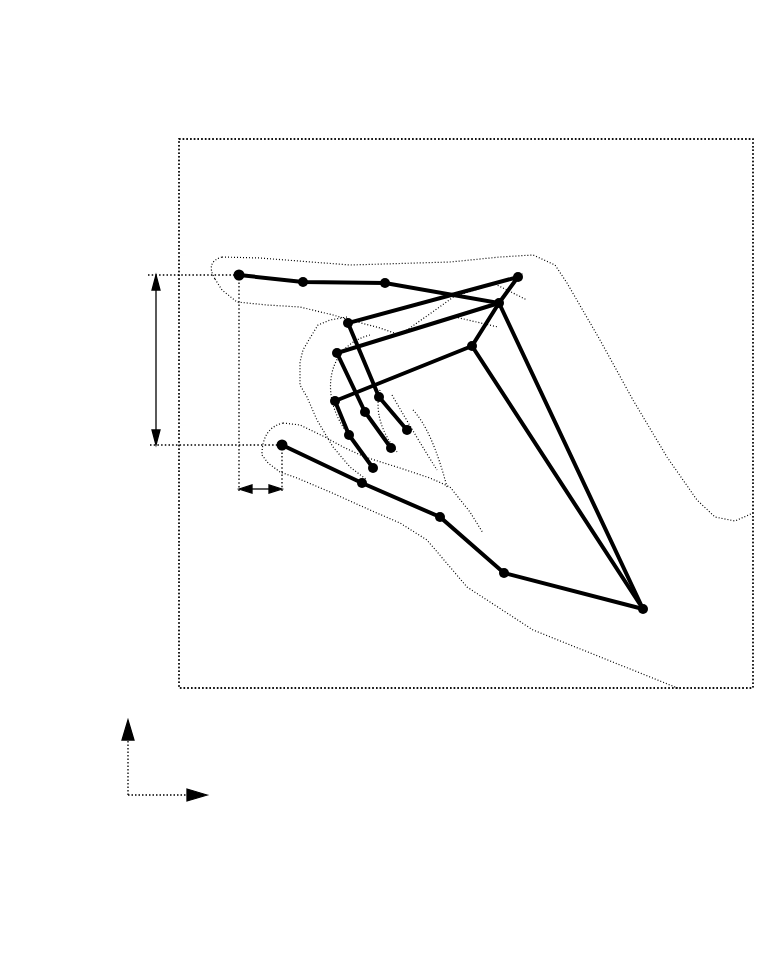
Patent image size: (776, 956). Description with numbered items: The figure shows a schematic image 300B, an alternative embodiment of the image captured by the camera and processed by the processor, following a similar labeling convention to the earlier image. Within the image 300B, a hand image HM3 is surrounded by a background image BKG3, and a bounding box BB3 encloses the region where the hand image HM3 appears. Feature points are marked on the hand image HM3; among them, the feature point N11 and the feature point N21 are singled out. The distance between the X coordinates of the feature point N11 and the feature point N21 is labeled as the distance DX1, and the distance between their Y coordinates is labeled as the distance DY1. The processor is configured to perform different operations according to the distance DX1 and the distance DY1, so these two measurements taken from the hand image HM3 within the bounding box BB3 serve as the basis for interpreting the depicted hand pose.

The image 300B is at (180, 38).
The background image BKG3 is at (190, 118).
The bounding box BB3 is at (440, 139).
The hand image HM3 is at (707, 668).
The feature point N21 is at (239, 270).
The feature point N11 is at (283, 452).
The distance DY1 is at (190, 383).
The distance DX1 is at (260, 506).